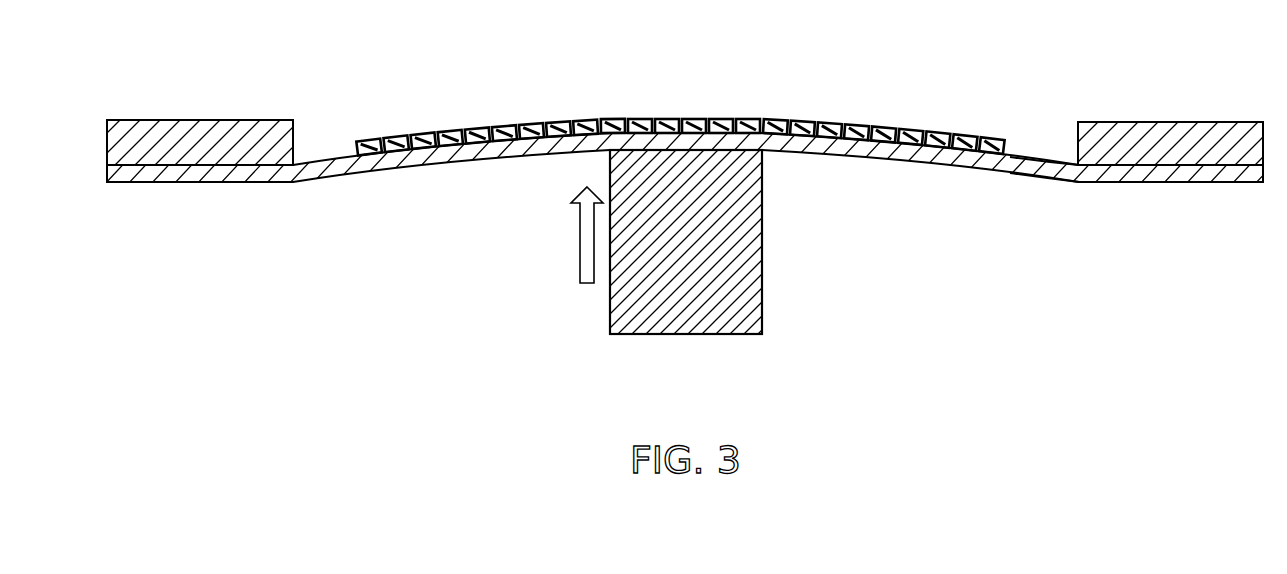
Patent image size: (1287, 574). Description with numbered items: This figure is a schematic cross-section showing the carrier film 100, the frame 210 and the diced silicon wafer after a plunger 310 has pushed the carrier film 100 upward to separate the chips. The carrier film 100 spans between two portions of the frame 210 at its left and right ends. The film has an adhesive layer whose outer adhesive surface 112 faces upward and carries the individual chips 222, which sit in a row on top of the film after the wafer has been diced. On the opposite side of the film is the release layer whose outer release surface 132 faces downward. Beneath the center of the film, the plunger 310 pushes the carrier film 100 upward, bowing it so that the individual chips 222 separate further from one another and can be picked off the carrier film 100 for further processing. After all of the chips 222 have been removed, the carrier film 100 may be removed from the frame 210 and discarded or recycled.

The carrier film 100 is at (320, 192).
The adhesive surface 112 is at (1041, 163).
The release surface 132 is at (1063, 181).
The frame 210 is at (207, 119).
The chips 222 is at (375, 140).
The plunger 310 is at (657, 337).